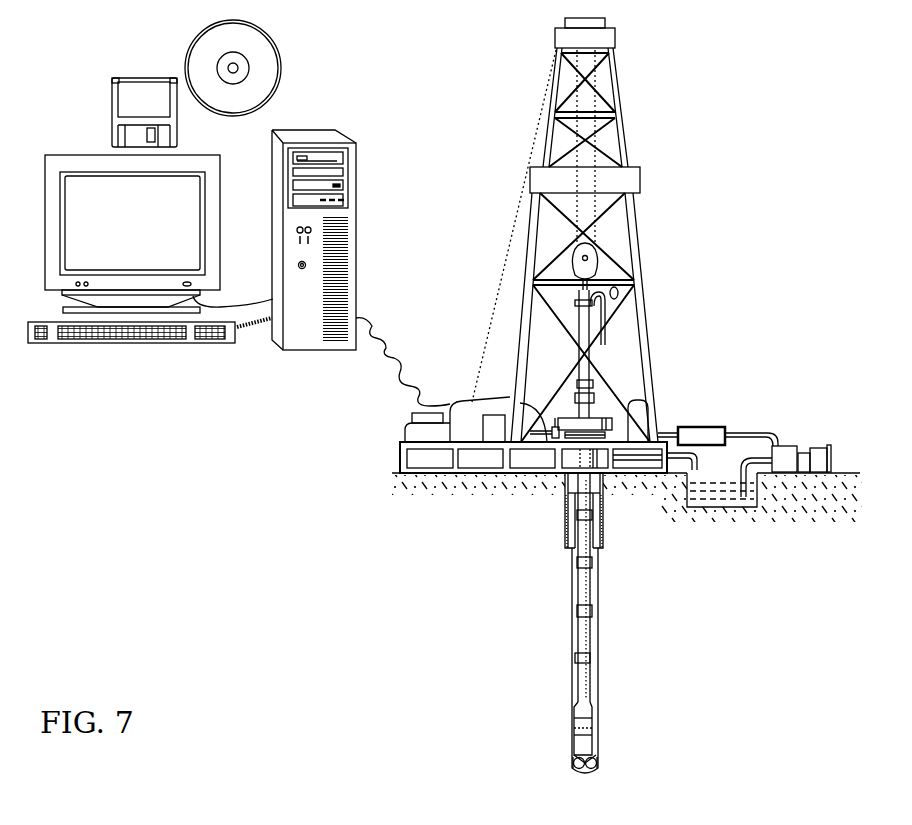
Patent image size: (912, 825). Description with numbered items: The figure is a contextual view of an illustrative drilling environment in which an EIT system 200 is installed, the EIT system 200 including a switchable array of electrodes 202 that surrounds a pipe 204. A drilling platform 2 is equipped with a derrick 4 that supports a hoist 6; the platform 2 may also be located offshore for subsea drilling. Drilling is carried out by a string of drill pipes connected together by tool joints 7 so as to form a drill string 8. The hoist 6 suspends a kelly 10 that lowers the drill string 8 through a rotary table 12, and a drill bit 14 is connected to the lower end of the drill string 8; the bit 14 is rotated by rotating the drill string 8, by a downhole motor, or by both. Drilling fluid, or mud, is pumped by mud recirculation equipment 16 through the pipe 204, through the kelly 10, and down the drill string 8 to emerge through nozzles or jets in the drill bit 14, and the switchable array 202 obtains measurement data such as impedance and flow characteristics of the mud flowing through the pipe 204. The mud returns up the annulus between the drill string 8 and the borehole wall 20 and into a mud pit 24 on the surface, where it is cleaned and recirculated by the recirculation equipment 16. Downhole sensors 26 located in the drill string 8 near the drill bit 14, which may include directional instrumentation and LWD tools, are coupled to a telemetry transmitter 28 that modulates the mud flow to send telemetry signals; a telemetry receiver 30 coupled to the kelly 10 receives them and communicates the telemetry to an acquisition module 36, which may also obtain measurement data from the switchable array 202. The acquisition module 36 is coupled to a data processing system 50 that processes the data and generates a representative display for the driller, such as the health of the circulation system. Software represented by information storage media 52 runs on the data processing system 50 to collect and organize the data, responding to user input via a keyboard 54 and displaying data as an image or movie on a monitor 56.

The drilling platform 2 is at (400, 447).
The derrick 4 is at (625, 137).
The hoist 6 is at (597, 256).
The tool joints 7 is at (575, 560).
The drill string 8 is at (577, 573).
The kelly 10 is at (583, 321).
The rotary table 12 is at (602, 417).
The drill bit 14 is at (594, 760).
The mud recirculation equipment 16 is at (785, 448).
The borehole wall 20 is at (597, 567).
The mud pit 24 is at (756, 505).
The downhole sensors 26 is at (577, 737).
The telemetry transmitter 28 is at (589, 720).
The telemetry receiver 30 is at (595, 386).
The acquisition module 36 is at (498, 418).
The data processing system 50 is at (272, 263).
The information storage media 52 is at (185, 63).
The keyboard 54 is at (52, 344).
The monitor 56 is at (55, 292).
The EIT system 200 is at (782, 368).
The switchable array of electrodes 202 is at (705, 435).
The pipe 204 is at (740, 432).